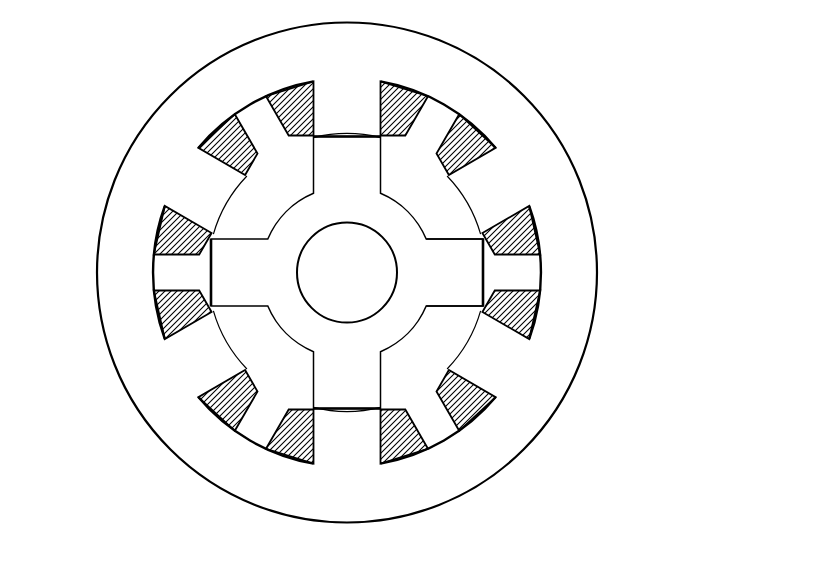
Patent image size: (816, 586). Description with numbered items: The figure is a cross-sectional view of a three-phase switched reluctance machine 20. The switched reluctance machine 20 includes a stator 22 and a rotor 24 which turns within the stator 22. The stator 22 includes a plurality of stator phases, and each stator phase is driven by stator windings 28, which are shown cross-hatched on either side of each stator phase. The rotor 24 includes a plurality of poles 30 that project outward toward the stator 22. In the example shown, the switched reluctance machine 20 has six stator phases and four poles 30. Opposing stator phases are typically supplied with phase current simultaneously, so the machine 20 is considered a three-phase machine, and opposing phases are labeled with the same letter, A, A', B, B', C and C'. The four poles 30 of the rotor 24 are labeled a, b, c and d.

The switched reluctance machine 20 is at (553, 96).
The stator 22 is at (598, 274).
The rotor 24 is at (424, 327).
The stator windings 28 is at (237, 377).
The pole 30 is at (453, 239).